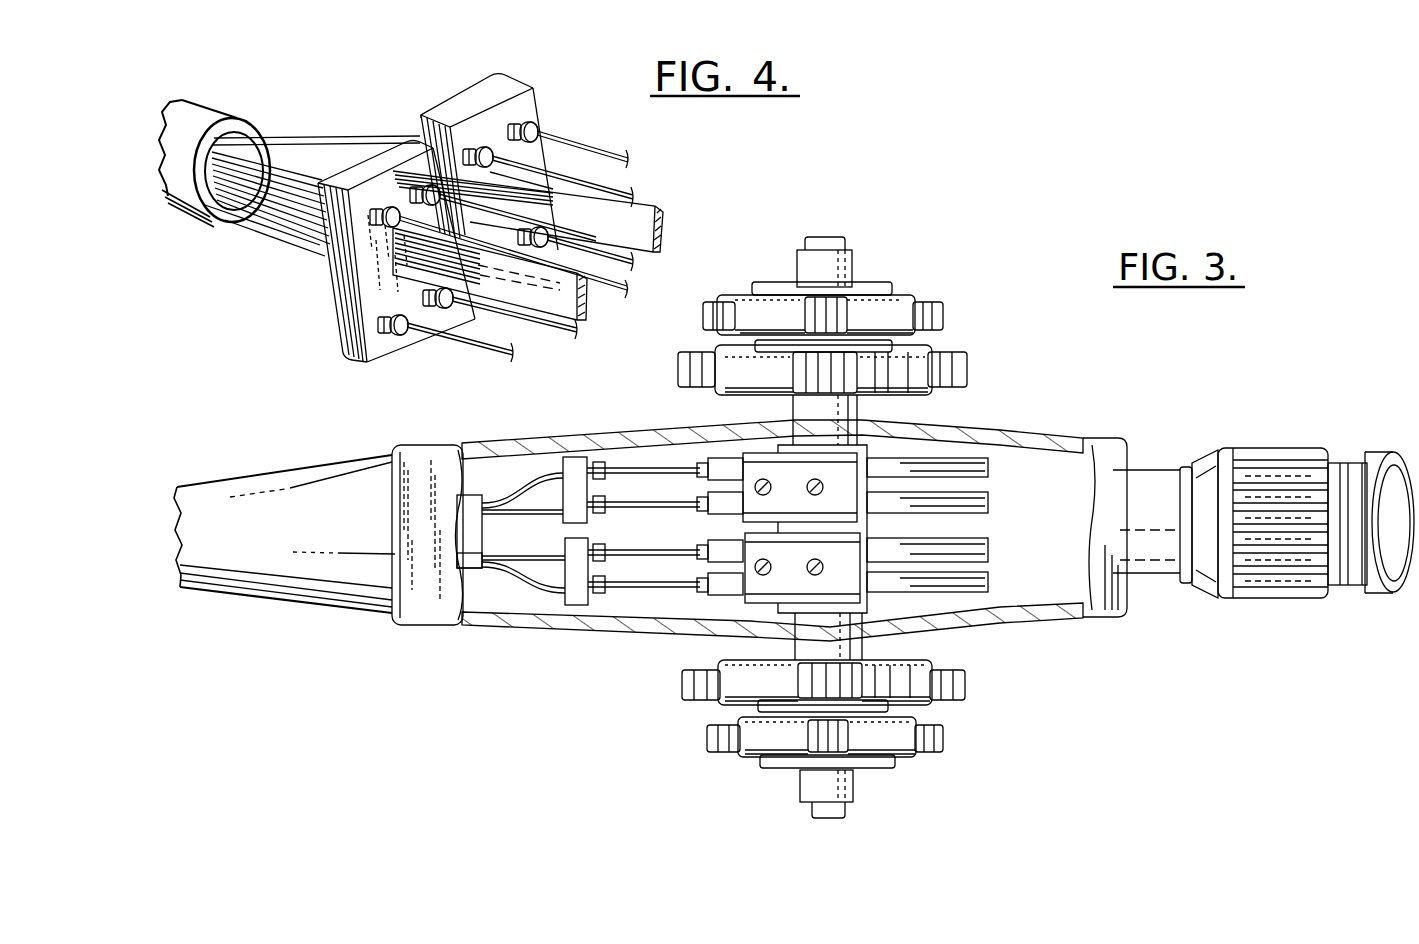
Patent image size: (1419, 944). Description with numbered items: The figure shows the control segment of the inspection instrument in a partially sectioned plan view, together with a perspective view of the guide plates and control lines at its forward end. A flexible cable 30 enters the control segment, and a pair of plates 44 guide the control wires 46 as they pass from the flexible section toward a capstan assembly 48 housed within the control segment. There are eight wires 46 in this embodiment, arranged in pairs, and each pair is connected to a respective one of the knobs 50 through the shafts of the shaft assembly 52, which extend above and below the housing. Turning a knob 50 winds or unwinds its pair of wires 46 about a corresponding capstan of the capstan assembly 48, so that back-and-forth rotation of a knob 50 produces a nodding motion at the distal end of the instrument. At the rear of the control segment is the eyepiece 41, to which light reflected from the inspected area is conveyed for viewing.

In FIG. 4, the fiber optic cable 30 is at (209, 213).
In FIG. 3, the fiber optic cable 30 is at (1043, 436).
In FIG. 3, the eyepiece 41 is at (1235, 452).
In FIG. 4, the plates 44 is at (465, 100).
In FIG. 4, the control wires 46 is at (557, 177).
In FIG. 3, the capstan assembly 48 is at (668, 609).
In FIG. 3, the knobs 50 is at (947, 350).
In FIG. 3, the shaft assembly 52 is at (830, 243).